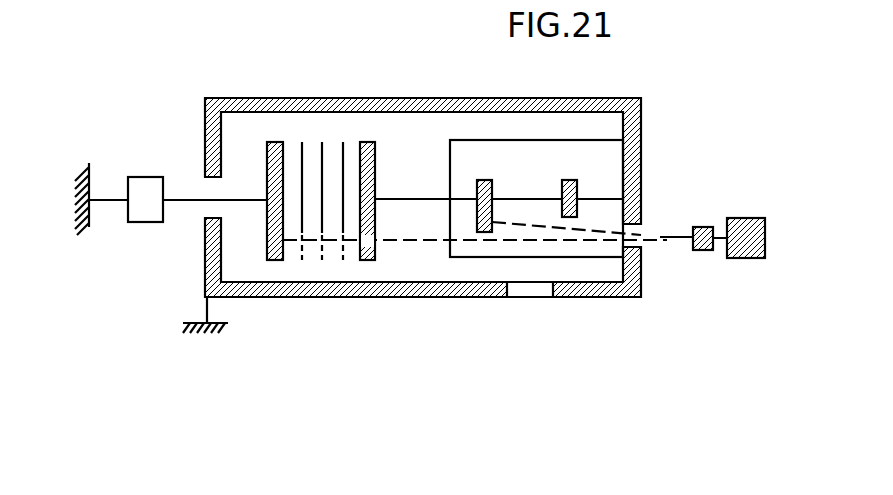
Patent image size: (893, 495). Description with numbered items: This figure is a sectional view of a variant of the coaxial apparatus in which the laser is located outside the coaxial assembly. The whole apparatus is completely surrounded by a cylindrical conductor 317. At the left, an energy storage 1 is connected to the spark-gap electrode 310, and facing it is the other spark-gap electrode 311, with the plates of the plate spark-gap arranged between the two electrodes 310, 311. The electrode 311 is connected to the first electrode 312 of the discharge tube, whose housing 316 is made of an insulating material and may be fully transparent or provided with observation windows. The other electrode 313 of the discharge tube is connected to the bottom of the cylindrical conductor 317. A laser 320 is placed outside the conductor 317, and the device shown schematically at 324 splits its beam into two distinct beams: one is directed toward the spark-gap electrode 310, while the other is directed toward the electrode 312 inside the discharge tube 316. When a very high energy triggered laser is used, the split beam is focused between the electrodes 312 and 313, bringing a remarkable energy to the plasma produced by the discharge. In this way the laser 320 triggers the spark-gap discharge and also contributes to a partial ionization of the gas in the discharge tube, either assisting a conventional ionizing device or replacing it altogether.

The energy storage 1 is at (146, 193).
The cylindrical conductor 317 is at (325, 98).
The discharge tube housing 316 is at (485, 286).
The spark-gap electrode 310 is at (267, 232).
The spark-gap electrode 311 is at (360, 253).
The first electrode of the discharge tube 312 is at (492, 198).
The other electrode of the discharge tube 313 is at (577, 180).
The beam-splitting device 324 is at (692, 250).
The laser 320 is at (747, 258).